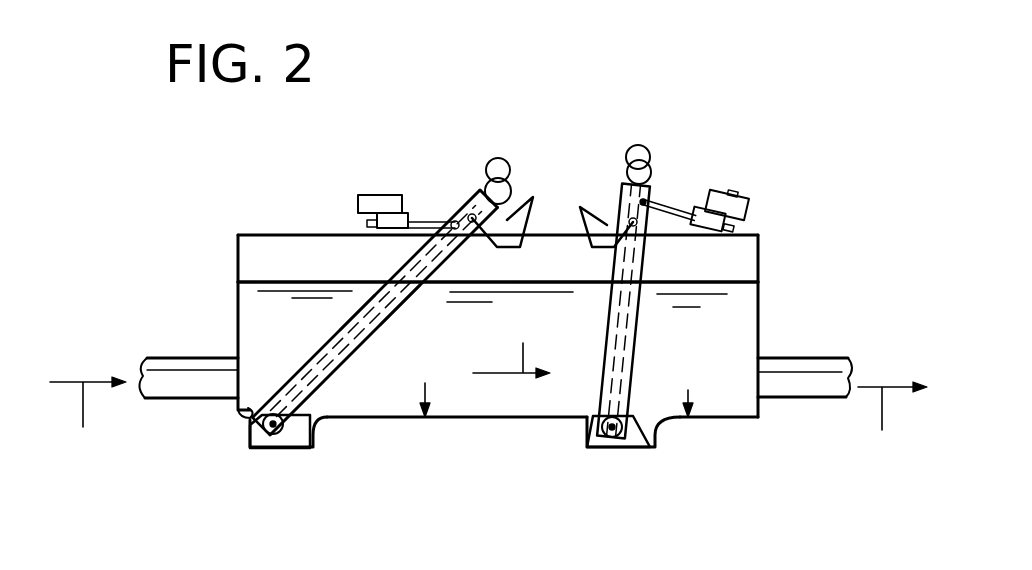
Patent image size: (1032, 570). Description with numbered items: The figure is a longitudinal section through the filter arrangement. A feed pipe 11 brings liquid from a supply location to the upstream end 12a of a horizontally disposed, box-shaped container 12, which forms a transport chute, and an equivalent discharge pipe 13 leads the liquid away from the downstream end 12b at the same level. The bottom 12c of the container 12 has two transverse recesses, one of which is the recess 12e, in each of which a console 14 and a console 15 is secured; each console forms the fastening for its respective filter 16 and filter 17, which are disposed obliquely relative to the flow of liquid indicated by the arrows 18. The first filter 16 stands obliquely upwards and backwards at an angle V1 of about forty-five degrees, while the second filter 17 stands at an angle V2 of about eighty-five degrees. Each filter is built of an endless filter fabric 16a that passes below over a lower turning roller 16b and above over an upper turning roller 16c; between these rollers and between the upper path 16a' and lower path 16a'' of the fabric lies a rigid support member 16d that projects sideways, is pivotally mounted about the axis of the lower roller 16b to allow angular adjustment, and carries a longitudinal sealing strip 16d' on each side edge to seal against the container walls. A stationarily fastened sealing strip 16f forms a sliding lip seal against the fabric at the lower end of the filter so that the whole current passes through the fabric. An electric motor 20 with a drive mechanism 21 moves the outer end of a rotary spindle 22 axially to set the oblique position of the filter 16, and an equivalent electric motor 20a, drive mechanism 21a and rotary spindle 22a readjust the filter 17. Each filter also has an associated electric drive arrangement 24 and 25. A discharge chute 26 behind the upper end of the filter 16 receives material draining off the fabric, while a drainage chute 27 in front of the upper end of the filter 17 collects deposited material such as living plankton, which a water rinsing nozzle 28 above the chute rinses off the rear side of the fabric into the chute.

The feed pipe 11 is at (147, 358).
The box-shaped container 12 is at (715, 320).
The upstream end 12a is at (238, 340).
The downstream end 12b is at (760, 337).
The bottom 12c is at (560, 418).
The transverse recess 12e is at (654, 450).
The discharge pipe 13 is at (828, 358).
The console 14 is at (272, 450).
The console 15 is at (625, 502).
The first filter 16 is at (341, 395).
The endless filter fabric 16a is at (321, 322).
The upper path of filter fabric 16a' is at (305, 304).
The lower path of filter fabric 16a'' is at (470, 424).
The lower turning roller 16b is at (250, 435).
The upper turning roller 16c is at (485, 183).
The rigid support member 16d is at (310, 482).
The longitudinal sealing strip 16d' is at (397, 396).
The stationarily fastened sealing strip 16f is at (238, 408).
The second filter 17 is at (633, 390).
The arrows 18 is at (700, 393).
The electric motor 20 is at (358, 208).
The electric motor 20a is at (740, 193).
The drive mechanism 21 is at (382, 195).
The drive mechanism 21a is at (720, 192).
The rotary spindle 22 is at (433, 222).
The rotary spindle 22a is at (673, 202).
The electric drive arrangement 24 is at (502, 158).
The electric drive arrangement 25 is at (640, 145).
The discharge chute 26 is at (522, 205).
The drainage chute 27 is at (597, 220).
The water rinsing nozzle 28 is at (650, 192).
The angle of first filter V1 is at (409, 381).
The angle of second filter V2 is at (671, 386).